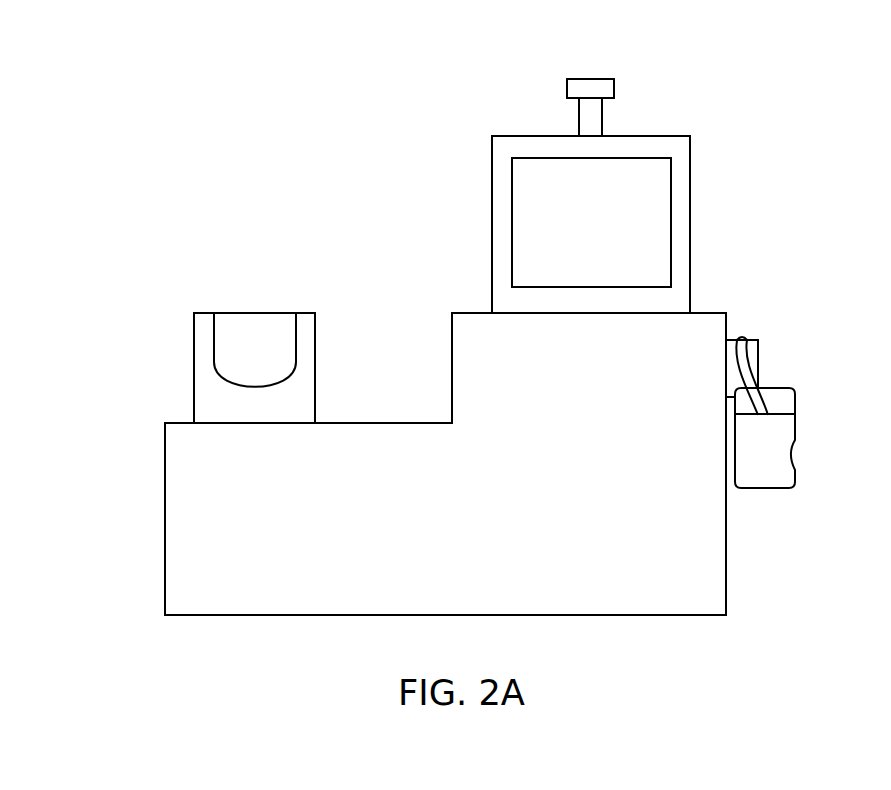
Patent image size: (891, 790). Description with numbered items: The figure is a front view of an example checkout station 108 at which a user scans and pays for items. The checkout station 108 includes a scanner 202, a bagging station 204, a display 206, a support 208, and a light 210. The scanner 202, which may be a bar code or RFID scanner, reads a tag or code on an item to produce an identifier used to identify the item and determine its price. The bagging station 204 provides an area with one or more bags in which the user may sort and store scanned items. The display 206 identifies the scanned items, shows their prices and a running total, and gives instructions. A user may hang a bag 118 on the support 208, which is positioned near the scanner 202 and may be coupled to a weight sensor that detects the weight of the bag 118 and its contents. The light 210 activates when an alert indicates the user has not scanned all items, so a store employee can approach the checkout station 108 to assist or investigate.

The checkout station 108 is at (462, 104).
The scanner 202 is at (712, 312).
The bagging station 204 is at (315, 337).
The display 206 is at (690, 143).
The support 208 is at (765, 370).
The light 210 is at (614, 80).
The bag 118 is at (797, 437).